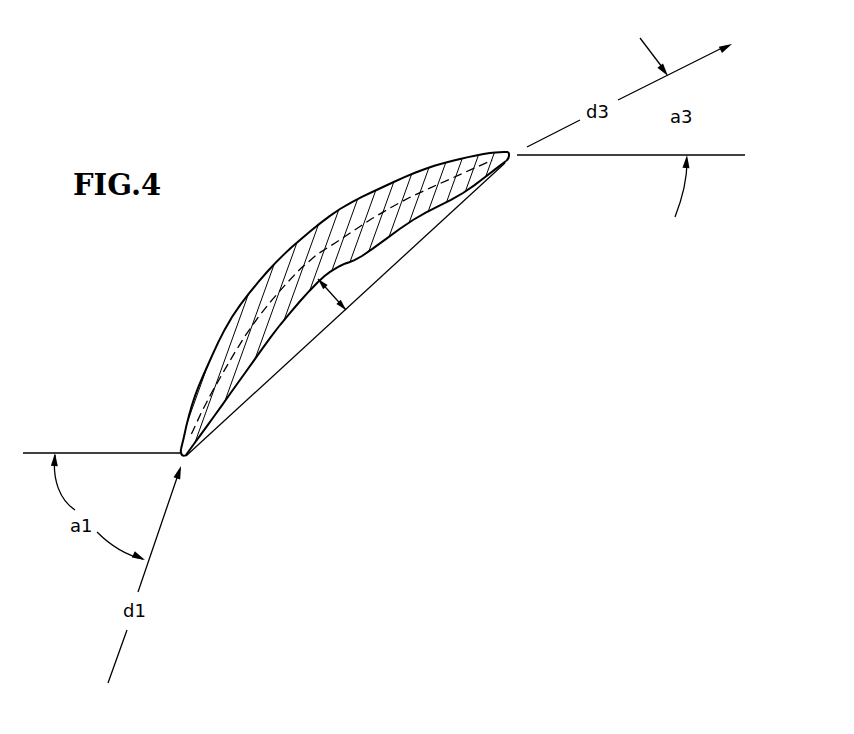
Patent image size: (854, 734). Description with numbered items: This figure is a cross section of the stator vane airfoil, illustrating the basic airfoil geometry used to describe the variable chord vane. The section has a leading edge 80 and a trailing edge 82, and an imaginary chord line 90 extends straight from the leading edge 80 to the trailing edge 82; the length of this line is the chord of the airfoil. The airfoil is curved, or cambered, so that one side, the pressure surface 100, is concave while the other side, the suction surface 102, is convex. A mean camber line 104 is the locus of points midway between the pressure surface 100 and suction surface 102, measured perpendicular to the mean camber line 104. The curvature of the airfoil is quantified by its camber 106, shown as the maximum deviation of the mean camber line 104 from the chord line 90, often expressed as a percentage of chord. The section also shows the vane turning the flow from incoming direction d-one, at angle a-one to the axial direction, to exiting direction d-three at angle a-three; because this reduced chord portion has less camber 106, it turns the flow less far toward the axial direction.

The leading edge 80 is at (187, 454).
The trailing edge 82 is at (513, 157).
The chord line 90 is at (450, 216).
The pressure surface 100 is at (369, 252).
The suction surface 102 is at (327, 221).
The mean camber line 104 is at (291, 285).
The camber 106 is at (333, 296).